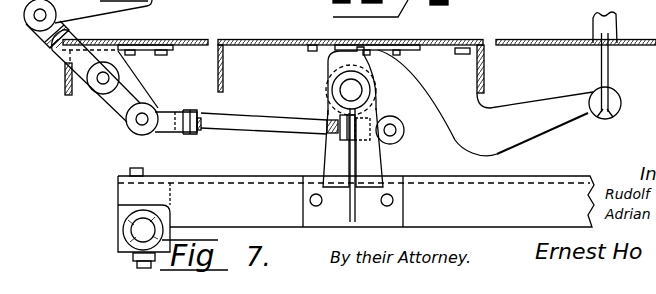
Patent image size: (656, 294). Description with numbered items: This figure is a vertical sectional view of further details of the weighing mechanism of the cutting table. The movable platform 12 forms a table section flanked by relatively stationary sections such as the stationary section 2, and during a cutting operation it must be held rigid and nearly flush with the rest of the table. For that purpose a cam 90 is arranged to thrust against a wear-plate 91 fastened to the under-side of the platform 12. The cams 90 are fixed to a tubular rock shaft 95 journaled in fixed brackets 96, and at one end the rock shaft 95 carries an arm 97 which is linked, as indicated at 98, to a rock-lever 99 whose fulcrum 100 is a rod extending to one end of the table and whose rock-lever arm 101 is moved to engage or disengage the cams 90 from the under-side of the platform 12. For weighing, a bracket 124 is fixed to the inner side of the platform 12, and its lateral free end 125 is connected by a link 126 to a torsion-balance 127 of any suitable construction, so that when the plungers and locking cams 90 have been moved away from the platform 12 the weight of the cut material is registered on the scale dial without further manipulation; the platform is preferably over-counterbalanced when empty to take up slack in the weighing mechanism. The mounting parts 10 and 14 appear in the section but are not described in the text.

The relatively stationary section of the table 2 is at (533, 40).
The supporting plate 10 is at (215, 38).
The platform 12 is at (276, 39).
The bearing 14 is at (133, 230).
The cam 90 is at (332, 67).
The wear-plate 91 is at (345, 48).
The tubular rock shaft 95 is at (345, 94).
The fixed bracket 96 is at (373, 164).
The arm 97 is at (377, 107).
The link 98 is at (250, 124).
The rock-lever 99 is at (122, 108).
The fulcrum 100 is at (100, 90).
The rock-lever arm 101 is at (78, 64).
The bracket 124 is at (540, 134).
The lateral free end 125 is at (622, 102).
The link 126 is at (609, 65).
The torsion-balance 127 is at (618, 19).